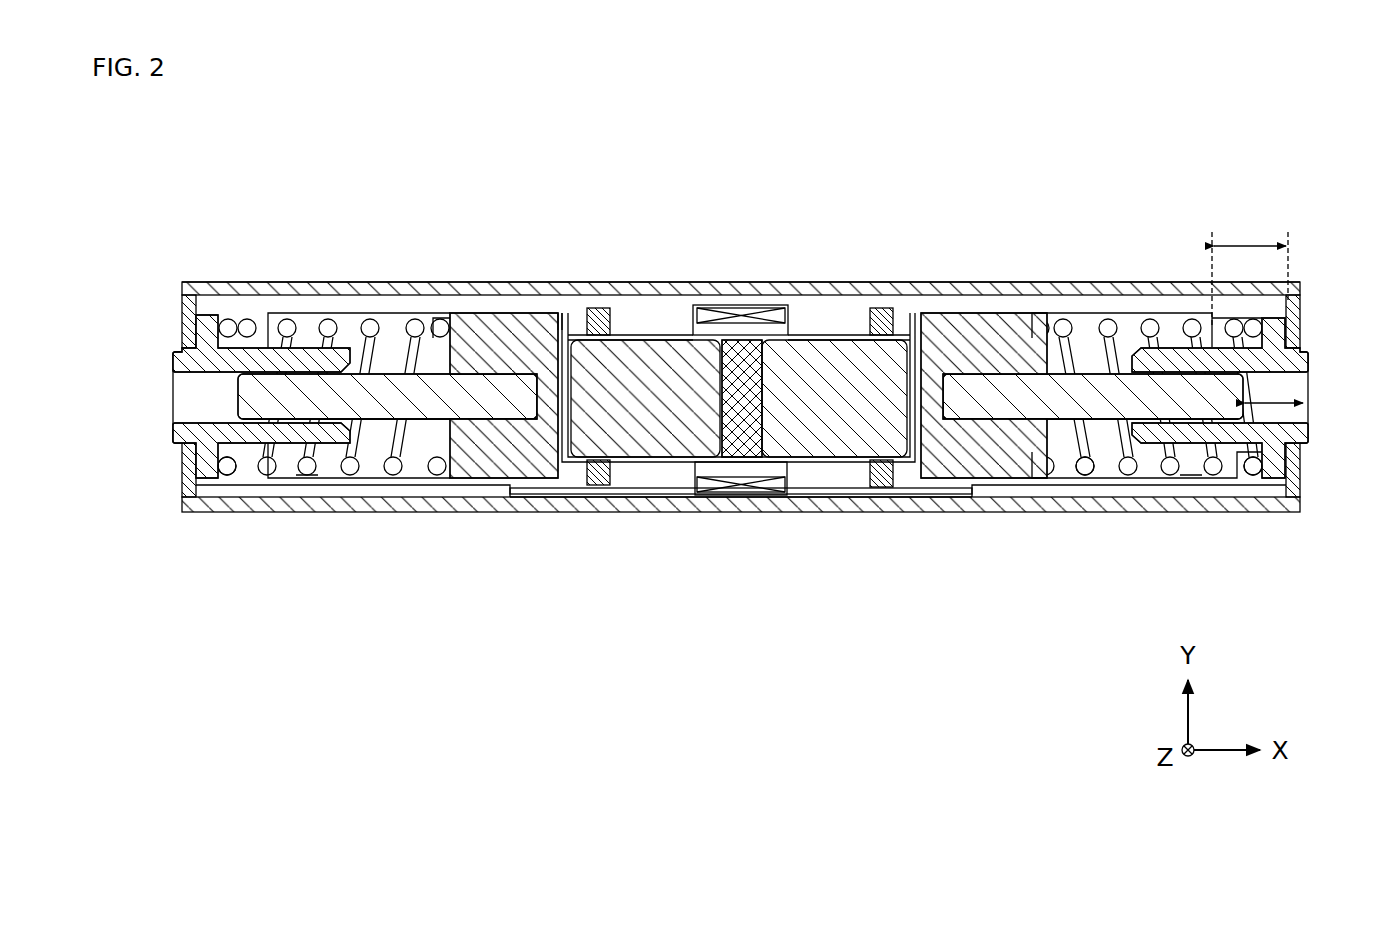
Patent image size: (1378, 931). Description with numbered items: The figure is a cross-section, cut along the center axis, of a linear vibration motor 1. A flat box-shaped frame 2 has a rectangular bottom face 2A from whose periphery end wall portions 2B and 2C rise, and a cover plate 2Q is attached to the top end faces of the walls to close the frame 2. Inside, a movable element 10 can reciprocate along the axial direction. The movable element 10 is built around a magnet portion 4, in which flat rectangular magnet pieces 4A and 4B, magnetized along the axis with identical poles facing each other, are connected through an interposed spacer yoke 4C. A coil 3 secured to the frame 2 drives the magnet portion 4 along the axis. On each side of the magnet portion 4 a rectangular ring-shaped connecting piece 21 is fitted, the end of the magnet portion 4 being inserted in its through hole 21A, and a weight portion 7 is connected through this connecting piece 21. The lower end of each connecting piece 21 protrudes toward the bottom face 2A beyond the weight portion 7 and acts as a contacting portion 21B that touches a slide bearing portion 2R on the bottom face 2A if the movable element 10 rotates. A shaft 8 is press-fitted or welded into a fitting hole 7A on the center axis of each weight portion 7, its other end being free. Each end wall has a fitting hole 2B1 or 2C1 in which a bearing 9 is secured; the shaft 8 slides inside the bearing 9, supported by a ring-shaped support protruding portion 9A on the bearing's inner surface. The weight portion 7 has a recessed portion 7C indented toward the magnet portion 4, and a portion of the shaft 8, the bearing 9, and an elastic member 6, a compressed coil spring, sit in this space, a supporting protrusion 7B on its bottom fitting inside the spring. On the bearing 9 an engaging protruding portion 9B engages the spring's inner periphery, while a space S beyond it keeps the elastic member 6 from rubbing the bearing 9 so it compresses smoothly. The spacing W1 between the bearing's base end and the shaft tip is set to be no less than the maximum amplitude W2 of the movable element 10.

The linear vibration motor 1 is at (1091, 128).
The frame 2 is at (801, 516).
The bottom face 2A is at (487, 487).
The wall portion 2B is at (184, 325).
The fitting hole 2B1 is at (176, 365).
The wall portion 2C is at (1302, 318).
The fitting hole 2C1 is at (1308, 362).
The cover plate 2Q is at (350, 282).
The slide bearing portion 2R is at (660, 490).
The coil 3 is at (748, 493).
The magnet portion 4 is at (653, 181).
The magnet piece 4A is at (668, 348).
The magnet piece 4B is at (808, 348).
The spacer yoke 4C is at (740, 318).
The elastic member 6 is at (242, 318).
The weight portion 7 is at (481, 325).
The fitting hole 7A is at (508, 355).
The supporting protrusion 7B is at (428, 465).
The recessed portion 7C is at (1124, 316).
The shaft 8 is at (1105, 465).
The bearing 9 is at (178, 434).
The support protruding portion 9A is at (352, 405).
The engaging protruding portion 9B is at (230, 477).
The movable element 10 is at (562, 300).
The connecting piece 21 is at (603, 308).
The through hole 21A is at (608, 336).
The contacting portion 21B is at (600, 480).
The space S is at (305, 478).
The spacing W1 is at (1274, 388).
The maximum amplitude W2 is at (1250, 269).